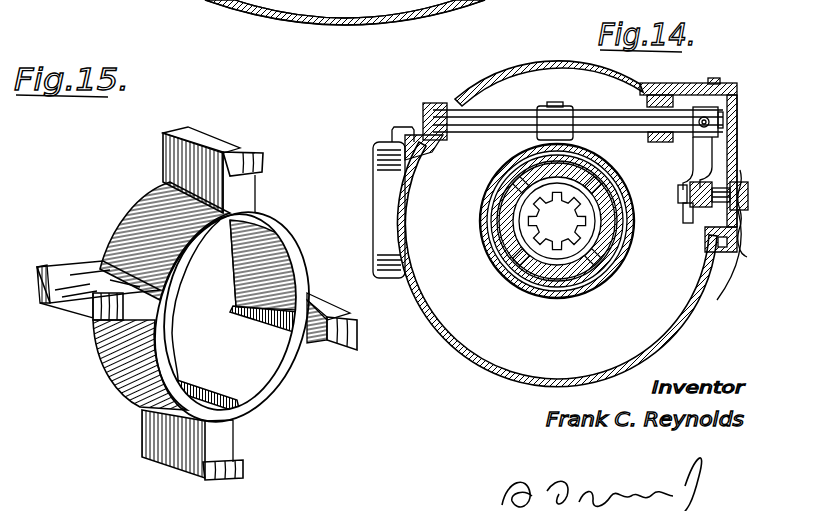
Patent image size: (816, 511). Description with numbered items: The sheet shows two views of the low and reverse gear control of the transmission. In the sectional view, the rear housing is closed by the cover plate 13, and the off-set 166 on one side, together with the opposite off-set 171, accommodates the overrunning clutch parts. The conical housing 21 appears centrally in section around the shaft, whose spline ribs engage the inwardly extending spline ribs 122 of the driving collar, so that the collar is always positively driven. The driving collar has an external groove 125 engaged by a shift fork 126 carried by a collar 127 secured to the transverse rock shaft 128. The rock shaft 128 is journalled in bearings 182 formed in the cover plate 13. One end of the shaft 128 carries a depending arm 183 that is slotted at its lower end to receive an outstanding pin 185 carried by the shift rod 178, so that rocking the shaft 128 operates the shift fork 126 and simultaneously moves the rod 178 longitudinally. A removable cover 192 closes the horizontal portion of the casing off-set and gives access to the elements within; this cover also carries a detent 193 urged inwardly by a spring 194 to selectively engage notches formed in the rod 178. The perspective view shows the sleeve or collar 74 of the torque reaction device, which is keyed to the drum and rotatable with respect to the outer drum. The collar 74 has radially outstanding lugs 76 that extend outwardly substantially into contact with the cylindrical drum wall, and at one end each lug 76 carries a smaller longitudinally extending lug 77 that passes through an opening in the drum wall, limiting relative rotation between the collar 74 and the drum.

In FIG. 14, the cover plate 13 is at (512, 67).
In FIG. 14, the conical housing 21 is at (585, 292).
In FIG. 15, the sleeve or collar 74 is at (140, 217).
In FIG. 15, the radially outstanding lug 76 is at (175, 150).
In FIG. 15, the longitudinally extending lug 77 is at (263, 162).
In FIG. 14, the inwardly extending spline ribs 122 is at (537, 297).
In FIG. 14, the external groove 125 is at (530, 272).
In FIG. 14, the shift fork 126 is at (492, 180).
In FIG. 14, the collar 127 is at (550, 110).
In FIG. 14, the transverse shaft 128 is at (498, 124).
In FIG. 14, the off-set 166 is at (376, 206).
In FIG. 14, the off-set 171 is at (714, 279).
In FIG. 14, the shift rod 178 is at (700, 212).
In FIG. 14, the bearings 182 is at (437, 105).
In FIG. 14, the depending arm 183 is at (700, 157).
In FIG. 14, the pin 185 is at (688, 192).
In FIG. 14, the cover 192 is at (733, 82).
In FIG. 14, the detent 193 is at (700, 247).
In FIG. 14, the spring 194 is at (698, 295).